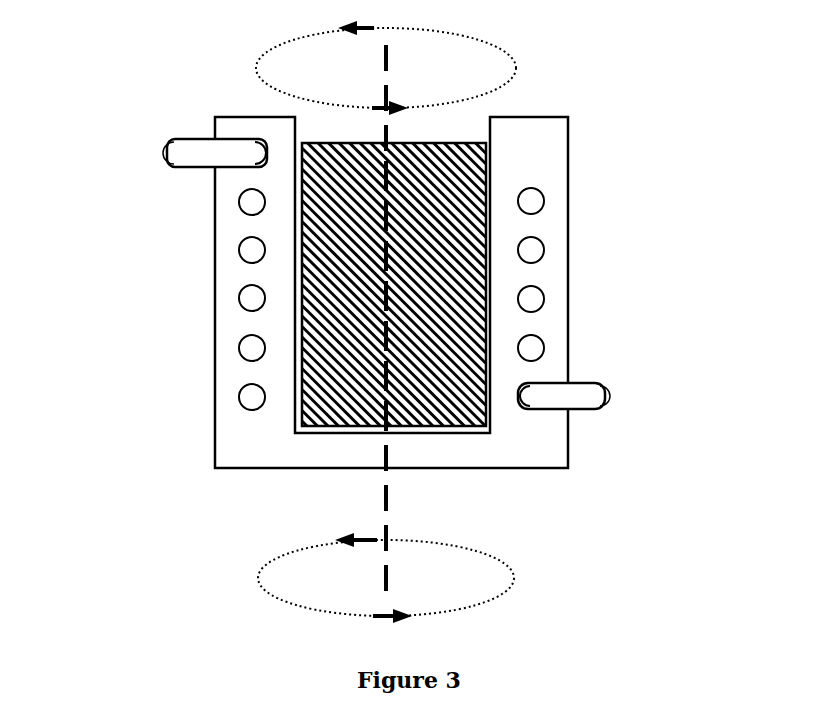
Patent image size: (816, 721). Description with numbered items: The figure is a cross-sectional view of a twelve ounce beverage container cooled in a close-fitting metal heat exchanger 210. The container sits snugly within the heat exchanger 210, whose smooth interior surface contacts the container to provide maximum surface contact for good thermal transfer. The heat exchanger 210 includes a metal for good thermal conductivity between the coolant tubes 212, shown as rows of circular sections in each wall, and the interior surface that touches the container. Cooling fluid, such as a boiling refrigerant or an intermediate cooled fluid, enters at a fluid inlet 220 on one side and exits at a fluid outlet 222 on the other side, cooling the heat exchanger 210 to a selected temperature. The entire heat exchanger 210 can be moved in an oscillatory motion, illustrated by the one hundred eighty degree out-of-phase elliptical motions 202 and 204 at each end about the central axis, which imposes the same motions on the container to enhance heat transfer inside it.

The elliptical motion 202 is at (463, 177).
The elliptical motion 204 is at (510, 564).
The heat exchanger 210 is at (571, 273).
The coolant tubes 212 is at (548, 200).
The fluid inlet 220 is at (156, 153).
The fluid outlet 222 is at (615, 396).